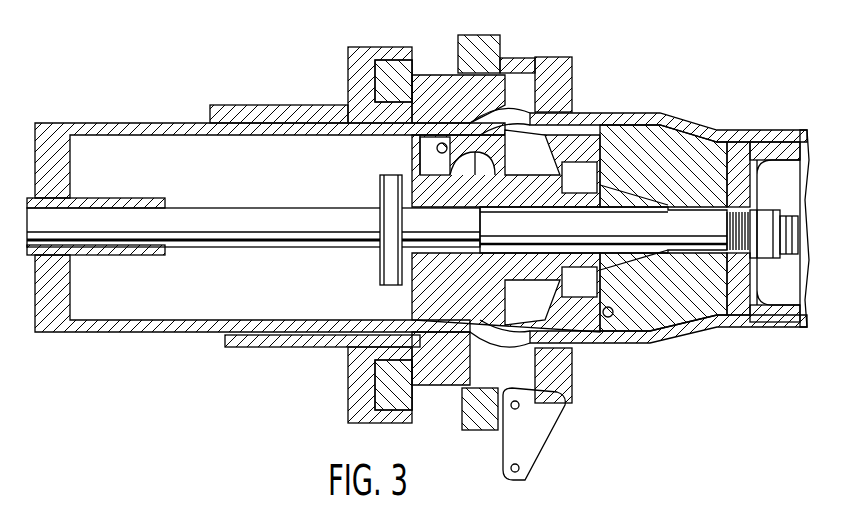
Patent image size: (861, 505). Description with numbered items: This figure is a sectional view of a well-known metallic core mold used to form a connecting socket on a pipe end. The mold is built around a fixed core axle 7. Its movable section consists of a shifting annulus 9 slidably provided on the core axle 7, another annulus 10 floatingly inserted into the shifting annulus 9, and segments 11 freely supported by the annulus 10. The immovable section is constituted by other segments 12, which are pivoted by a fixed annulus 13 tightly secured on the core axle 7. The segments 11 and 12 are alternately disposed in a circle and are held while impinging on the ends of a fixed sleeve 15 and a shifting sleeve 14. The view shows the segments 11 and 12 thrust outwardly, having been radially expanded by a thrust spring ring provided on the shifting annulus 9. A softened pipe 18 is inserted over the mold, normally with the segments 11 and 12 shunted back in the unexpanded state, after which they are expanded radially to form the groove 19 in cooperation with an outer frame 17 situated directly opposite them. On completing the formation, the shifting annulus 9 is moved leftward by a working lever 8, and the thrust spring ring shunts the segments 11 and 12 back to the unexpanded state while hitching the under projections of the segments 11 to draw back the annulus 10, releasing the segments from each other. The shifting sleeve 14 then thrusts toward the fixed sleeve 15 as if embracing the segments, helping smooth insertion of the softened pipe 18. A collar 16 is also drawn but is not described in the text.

The fixed core axle 7 is at (138, 198).
The working lever 8 is at (239, 208).
The shifting annulus 9 is at (365, 270).
The annulus 10 is at (370, 150).
The segments 11 is at (478, 118).
The segments 12 is at (592, 318).
The fixed annulus 13 is at (672, 302).
The shifting sleeve 14 is at (143, 333).
The fixed sleeve 15 is at (690, 134).
The collar 16 is at (289, 104).
The outer frame 17 is at (568, 92).
The softened pipe 18 is at (750, 142).
The groove 19 is at (536, 80).